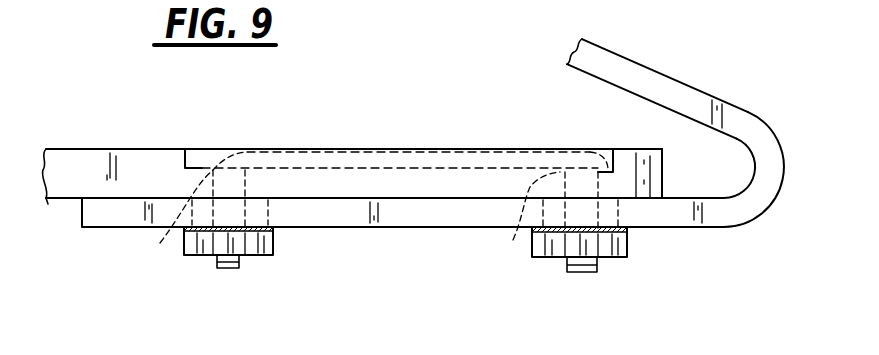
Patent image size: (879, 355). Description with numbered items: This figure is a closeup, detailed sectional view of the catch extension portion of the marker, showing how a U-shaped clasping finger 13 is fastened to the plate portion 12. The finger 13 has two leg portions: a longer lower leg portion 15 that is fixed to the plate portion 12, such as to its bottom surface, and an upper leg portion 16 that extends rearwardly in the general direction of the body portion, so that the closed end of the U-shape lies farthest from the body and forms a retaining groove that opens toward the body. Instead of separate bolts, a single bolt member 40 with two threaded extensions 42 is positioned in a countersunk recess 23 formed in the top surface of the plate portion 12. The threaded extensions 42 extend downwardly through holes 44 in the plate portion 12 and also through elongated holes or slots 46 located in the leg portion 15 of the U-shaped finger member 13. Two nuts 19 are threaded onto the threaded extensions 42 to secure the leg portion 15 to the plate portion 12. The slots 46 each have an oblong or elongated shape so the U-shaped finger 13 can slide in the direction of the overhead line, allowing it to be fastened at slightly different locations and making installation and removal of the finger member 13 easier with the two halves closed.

The plate portion 12 is at (96, 160).
The U-shaped clasping finger 13 is at (775, 158).
The leg portion 15 is at (407, 217).
The leg portion 16 is at (660, 82).
The nut 19 is at (263, 256).
The countersunk recess 23 is at (191, 148).
The bolt member 40 is at (250, 148).
The threaded extension 42 is at (227, 270).
The hole 44 is at (341, 204).
The elongated hole 46 is at (263, 207).